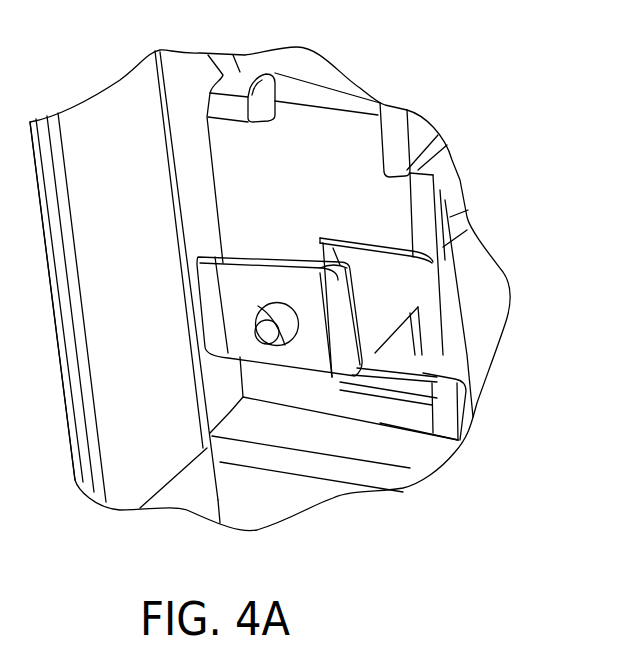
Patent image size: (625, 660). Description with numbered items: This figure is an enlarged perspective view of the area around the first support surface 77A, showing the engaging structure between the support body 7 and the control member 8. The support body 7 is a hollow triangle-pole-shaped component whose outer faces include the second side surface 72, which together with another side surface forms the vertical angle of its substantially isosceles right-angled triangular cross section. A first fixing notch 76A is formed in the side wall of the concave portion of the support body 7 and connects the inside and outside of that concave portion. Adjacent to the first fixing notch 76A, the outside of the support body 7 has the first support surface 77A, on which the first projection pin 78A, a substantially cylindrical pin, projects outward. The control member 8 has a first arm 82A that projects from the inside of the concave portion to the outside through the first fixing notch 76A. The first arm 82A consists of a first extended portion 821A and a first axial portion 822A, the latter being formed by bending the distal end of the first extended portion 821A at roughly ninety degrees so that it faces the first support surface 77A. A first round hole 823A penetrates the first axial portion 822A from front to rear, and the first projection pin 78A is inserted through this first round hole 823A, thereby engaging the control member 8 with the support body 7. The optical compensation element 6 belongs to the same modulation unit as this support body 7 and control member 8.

The optical compensation element 6 is at (483, 278).
The support body 7 is at (312, 123).
The first support surface 77A is at (303, 181).
The second side surface 72 is at (432, 185).
The control member 8 is at (433, 332).
The first fixing notch 76A is at (433, 360).
The first projection pin 78A is at (258, 341).
The first round hole 823A is at (263, 304).
The first axial portion 822A is at (308, 352).
The first extended portion 821A is at (378, 318).
The first arm 82A is at (448, 570).